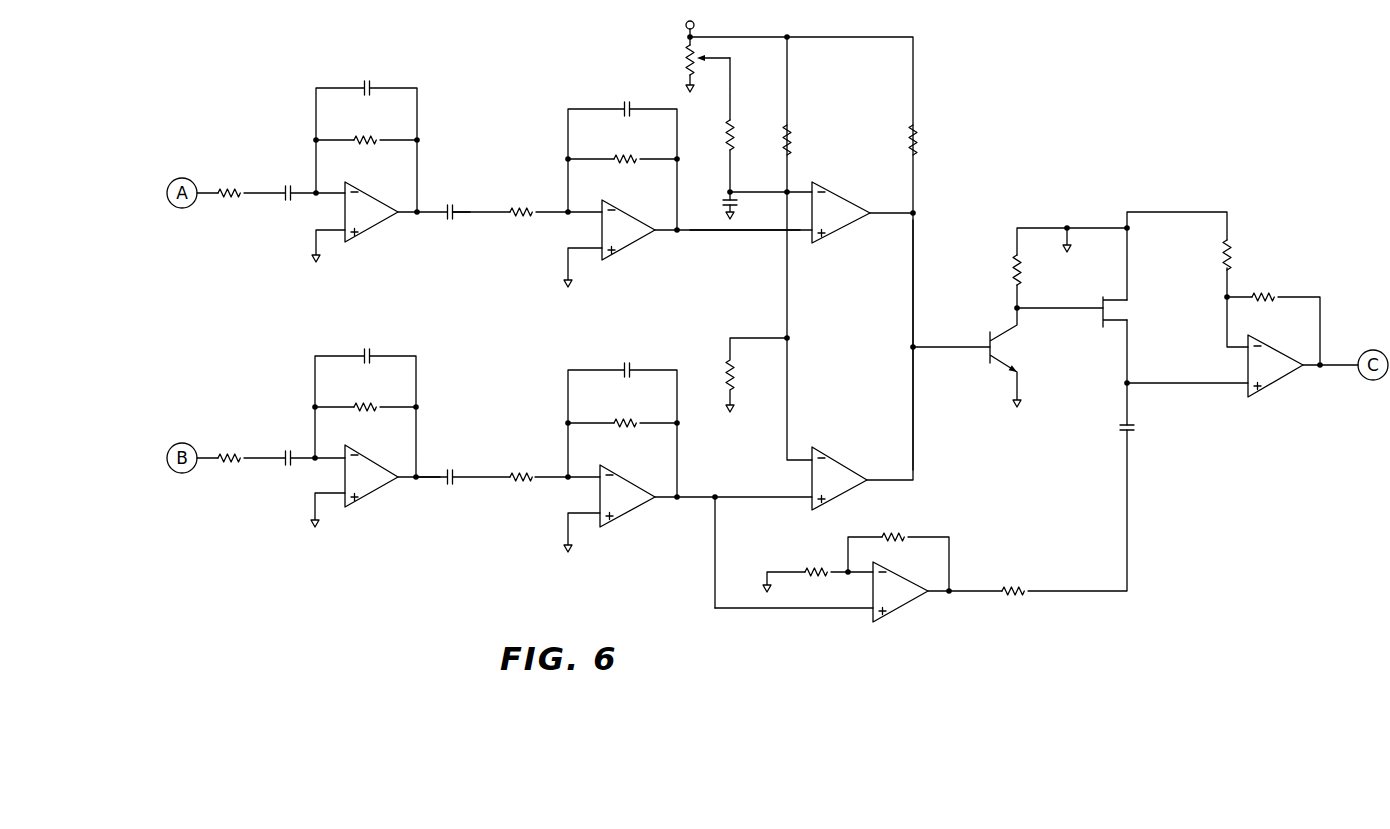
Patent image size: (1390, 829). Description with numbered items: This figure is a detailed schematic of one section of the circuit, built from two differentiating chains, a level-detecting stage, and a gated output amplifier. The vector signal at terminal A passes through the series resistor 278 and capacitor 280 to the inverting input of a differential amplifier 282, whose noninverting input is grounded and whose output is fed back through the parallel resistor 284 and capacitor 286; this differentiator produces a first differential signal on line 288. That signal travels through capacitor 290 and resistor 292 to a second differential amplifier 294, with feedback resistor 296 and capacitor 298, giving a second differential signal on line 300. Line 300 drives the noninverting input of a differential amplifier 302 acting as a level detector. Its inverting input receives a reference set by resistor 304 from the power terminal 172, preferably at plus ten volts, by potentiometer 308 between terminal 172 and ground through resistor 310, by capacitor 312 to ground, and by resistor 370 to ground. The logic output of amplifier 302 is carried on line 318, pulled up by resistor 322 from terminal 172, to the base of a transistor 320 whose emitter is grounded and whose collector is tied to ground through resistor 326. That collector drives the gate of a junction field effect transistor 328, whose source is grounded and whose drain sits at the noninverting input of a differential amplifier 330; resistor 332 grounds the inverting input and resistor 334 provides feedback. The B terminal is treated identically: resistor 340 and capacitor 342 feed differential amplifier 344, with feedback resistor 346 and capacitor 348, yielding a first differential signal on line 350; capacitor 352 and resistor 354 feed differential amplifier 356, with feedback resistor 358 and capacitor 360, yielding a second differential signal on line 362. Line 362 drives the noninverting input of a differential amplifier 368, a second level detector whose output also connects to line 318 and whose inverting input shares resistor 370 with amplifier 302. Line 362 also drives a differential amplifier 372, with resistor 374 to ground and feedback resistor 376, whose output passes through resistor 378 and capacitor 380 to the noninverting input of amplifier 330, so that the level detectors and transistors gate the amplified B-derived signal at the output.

The power terminal 172 is at (694, 25).
The resistor 278 is at (234, 197).
The capacitor 280 is at (292, 198).
The differential amplifier 282 is at (375, 200).
The resistor 284 is at (367, 139).
The capacitor 286 is at (370, 88).
The line 288 is at (432, 210).
The capacitor 290 is at (458, 210).
The resistor 292 is at (523, 210).
The differential amplifier 294 is at (626, 216).
The resistor 296 is at (626, 158).
The capacitor 298 is at (628, 108).
The line 300 is at (740, 232).
The differential amplifier 302 is at (830, 195).
The resistor 304 is at (792, 135).
The potentiometer 308 is at (688, 47).
The resistor 310 is at (730, 132).
The capacitor 312 is at (727, 203).
The line 318 is at (914, 274).
The transistor 320 is at (988, 335).
The resistor 322 is at (918, 135).
The resistor 326 is at (1012, 262).
The junction field effect transistor 328 is at (1105, 302).
The differential amplifier 330 is at (1300, 320).
The resistor 332 is at (1225, 255).
The resistor 334 is at (1265, 294).
The resistor 340 is at (230, 454).
The capacitor 342 is at (292, 453).
The differential amplifier 344 is at (358, 451).
The resistor 346 is at (372, 404).
The capacitor 348 is at (371, 354).
The line 350 is at (430, 474).
The capacitor 352 is at (456, 480).
The resistor 354 is at (522, 474).
The differential amplifier 356 is at (614, 466).
The resistor 358 is at (625, 421).
The capacitor 360 is at (630, 368).
The line 362 is at (700, 495).
The differential amplifier 368 is at (838, 461).
The resistor 370 is at (724, 367).
The differential amplifier 372 is at (904, 610).
The resistor 374 is at (817, 568).
The resistor 376 is at (900, 535).
The resistor 378 is at (1016, 596).
The capacitor 380 is at (1135, 428).